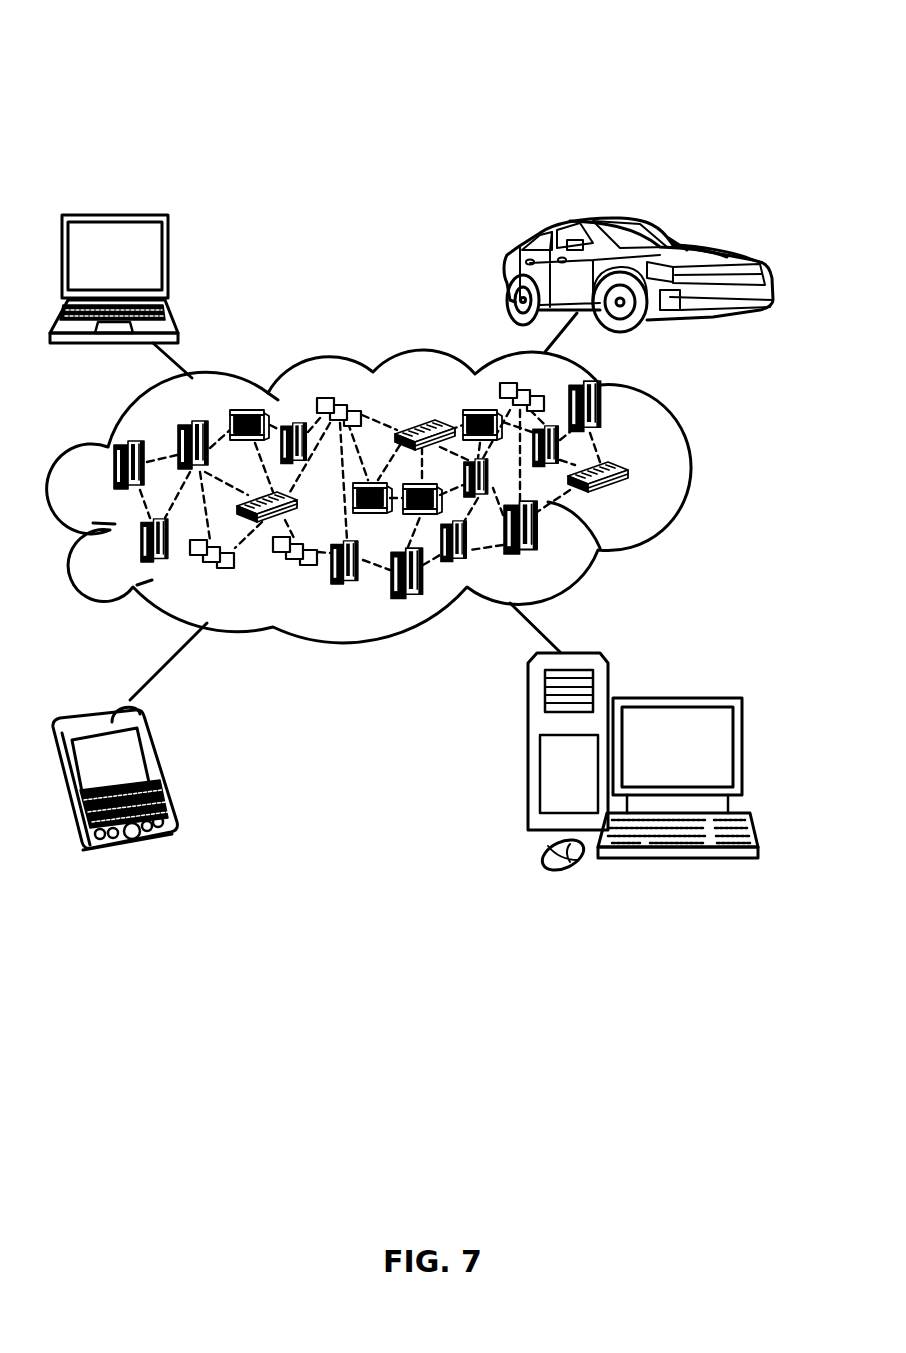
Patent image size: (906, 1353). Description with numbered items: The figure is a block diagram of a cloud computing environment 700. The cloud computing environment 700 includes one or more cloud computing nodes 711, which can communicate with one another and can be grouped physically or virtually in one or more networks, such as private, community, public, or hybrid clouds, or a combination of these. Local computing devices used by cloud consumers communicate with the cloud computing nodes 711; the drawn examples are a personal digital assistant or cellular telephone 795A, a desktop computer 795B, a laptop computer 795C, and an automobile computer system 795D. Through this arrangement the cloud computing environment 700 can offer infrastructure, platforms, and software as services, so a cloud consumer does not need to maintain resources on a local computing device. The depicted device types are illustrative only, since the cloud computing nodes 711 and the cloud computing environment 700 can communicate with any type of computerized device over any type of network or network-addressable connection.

The cloud computing environment 700 is at (364, 78).
The cloud computing nodes 711 is at (636, 499).
The personal digital assistant or cellular telephone 795A is at (160, 768).
The desktop computer 795B is at (673, 698).
The laptop computer 795C is at (168, 262).
The automobile computer system 795D is at (623, 285).